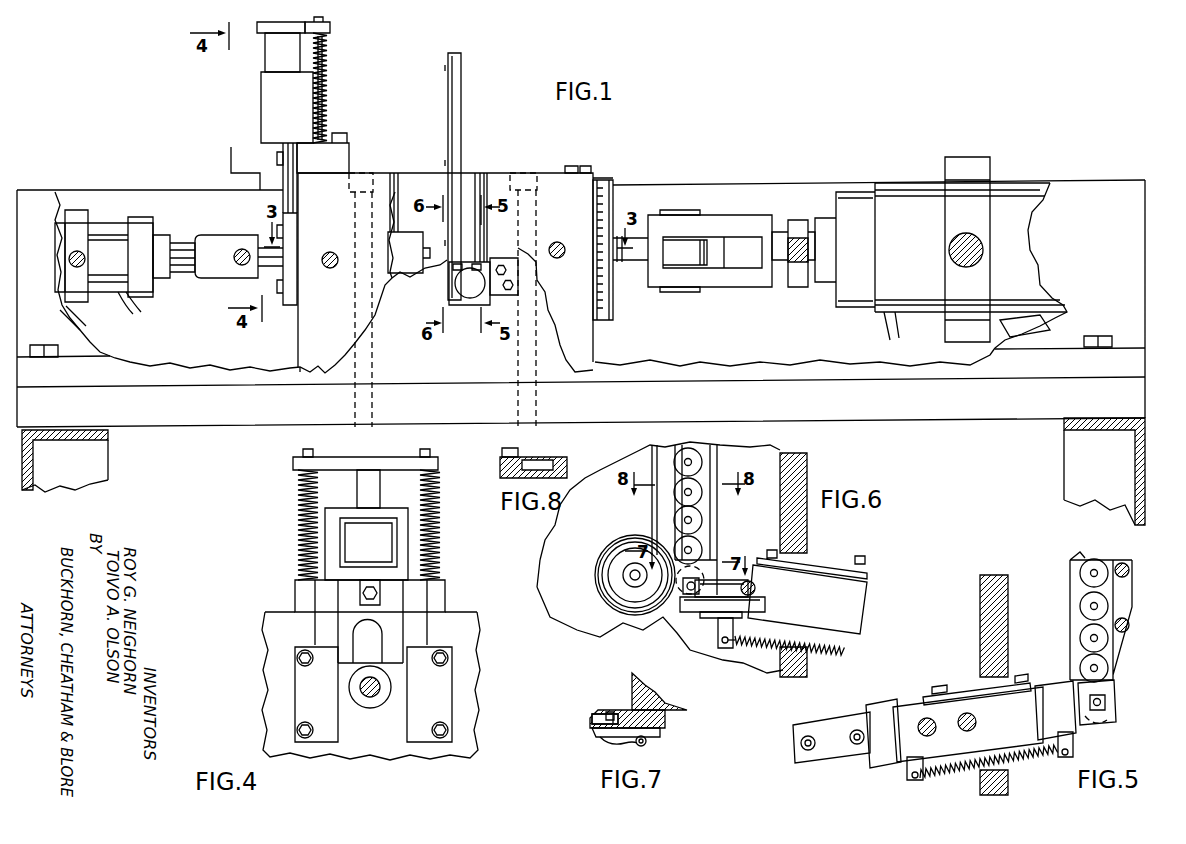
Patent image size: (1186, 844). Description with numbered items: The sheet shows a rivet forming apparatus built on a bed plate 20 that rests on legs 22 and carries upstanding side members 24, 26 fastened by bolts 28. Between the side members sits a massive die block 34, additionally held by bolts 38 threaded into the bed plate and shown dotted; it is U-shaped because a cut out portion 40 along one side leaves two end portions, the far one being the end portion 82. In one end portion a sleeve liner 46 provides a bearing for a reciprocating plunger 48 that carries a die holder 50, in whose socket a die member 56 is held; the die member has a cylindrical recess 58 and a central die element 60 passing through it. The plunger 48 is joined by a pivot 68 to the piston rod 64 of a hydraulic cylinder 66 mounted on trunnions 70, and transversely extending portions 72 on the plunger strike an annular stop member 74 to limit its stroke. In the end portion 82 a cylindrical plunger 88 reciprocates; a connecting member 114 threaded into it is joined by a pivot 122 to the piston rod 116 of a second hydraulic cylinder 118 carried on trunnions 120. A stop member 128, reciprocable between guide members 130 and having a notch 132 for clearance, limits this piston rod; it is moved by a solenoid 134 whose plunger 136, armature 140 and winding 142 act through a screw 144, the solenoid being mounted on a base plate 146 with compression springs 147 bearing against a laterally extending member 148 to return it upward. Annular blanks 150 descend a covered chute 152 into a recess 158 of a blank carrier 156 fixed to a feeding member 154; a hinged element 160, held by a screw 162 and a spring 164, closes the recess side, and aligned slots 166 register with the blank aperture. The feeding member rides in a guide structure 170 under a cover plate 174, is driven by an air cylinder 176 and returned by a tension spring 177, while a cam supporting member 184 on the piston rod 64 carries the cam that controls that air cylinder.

In FIG. 1, the bed plate 20 is at (188, 426).
In FIG. 1, the legs 22 is at (100, 459).
In FIG. 1, the side member 24 is at (690, 185).
In FIG. 1, the side member 26 is at (1108, 183).
In FIG. 1, the bolts 28 is at (56, 345).
In FIG. 1, the die block 34 is at (548, 180).
In FIG. 1, the bolts 38 is at (362, 175).
In FIG. 1, the cut out portion 40 is at (392, 188).
In FIG. 6, the sleeve liner 46 is at (600, 558).
In FIG. 1, the plunger 48 is at (645, 257).
In FIG. 1, the die holder 50 is at (480, 248).
In FIG. 6, the die holder 50 is at (607, 549).
In FIG. 6, the die member 56 is at (628, 534).
In FIG. 6, the cylindrical recess 58 is at (623, 580).
In FIG. 1, the central die element 60 is at (478, 262).
In FIG. 6, the central die element 60 is at (630, 584).
In FIG. 1, the piston rod 64 is at (752, 222).
In FIG. 1, the hydraulic cylinder 66 is at (897, 195).
In FIG. 1, the pivot 68 is at (680, 242).
In FIG. 1, the trunnions 70 is at (983, 253).
In FIG. 1, the transversely extending portions 72 is at (690, 262).
In FIG. 1, the annular stop member 74 is at (605, 318).
In FIG. 1, the end portion 82 is at (296, 375).
In FIG. 5, the end portion 82 is at (1007, 630).
In FIG. 4, the plunger 88 is at (383, 698).
In FIG. 1, the connecting member 114 is at (275, 268).
In FIG. 4, the connecting member 114 is at (378, 695).
In FIG. 1, the piston rod 116 is at (180, 247).
In FIG. 1, the hydraulic cylinder 118 is at (105, 232).
In FIG. 1, the trunnions 120 is at (85, 252).
In FIG. 1, the pivot 122 is at (240, 251).
In FIG. 1, the stop member 128 is at (292, 182).
In FIG. 4, the stop member 128 is at (347, 615).
In FIG. 1, the guide members 130 is at (290, 305).
In FIG. 4, the guide members 130 is at (298, 695).
In FIG. 4, the notch 132 is at (382, 638).
In FIG. 1, the solenoid 134 is at (258, 95).
In FIG. 4, the solenoid 134 is at (407, 506).
In FIG. 1, the plunger 136 is at (270, 57).
In FIG. 4, the plunger 136 is at (367, 490).
In FIG. 1, the armature 140 is at (272, 26).
In FIG. 4, the armature 140 is at (372, 462).
In FIG. 1, the winding 142 is at (305, 98).
In FIG. 4, the winding 142 is at (387, 542).
In FIG. 1, the screw 144 is at (278, 160).
In FIG. 4, the screw 144 is at (370, 590).
In FIG. 1, the base plate 146 is at (340, 152).
In FIG. 4, the base plate 146 is at (438, 598).
In FIG. 1, the compression springs 147 is at (325, 68).
In FIG. 4, the compression springs 147 is at (305, 500).
In FIG. 1, the laterally extending member 148 is at (328, 28).
In FIG. 4, the laterally extending member 148 is at (432, 463).
In FIG. 8, the blanks 150 is at (558, 455).
In FIG. 6, the blanks 150 is at (712, 450).
In FIG. 5, the blanks 150 is at (1113, 604).
In FIG. 1, the chute 152 is at (455, 145).
In FIG. 6, the chute 152 is at (657, 497).
In FIG. 7, the feeding member 154 is at (664, 701).
In FIG. 5, the feeding member 154 is at (1043, 697).
In FIG. 6, the blank carrier 156 is at (683, 620).
In FIG. 7, the blank carrier 156 is at (660, 718).
In FIG. 5, the blank carrier 156 is at (1108, 727).
In FIG. 7, the recess 158 is at (590, 720).
In FIG. 5, the recess 158 is at (1097, 730).
In FIG. 6, the hinged element 160 is at (712, 602).
In FIG. 7, the hinged element 160 is at (590, 732).
In FIG. 6, the screw 162 is at (752, 588).
In FIG. 7, the screw 162 is at (649, 739).
In FIG. 6, the spring 164 is at (746, 598).
In FIG. 7, the spring 164 is at (631, 743).
In FIG. 6, the slots 166 is at (668, 606).
In FIG. 7, the slots 166 is at (610, 712).
In FIG. 5, the slots 166 is at (1107, 703).
In FIG. 6, the guide structure 170 is at (852, 600).
In FIG. 5, the guide structure 170 is at (905, 705).
In FIG. 6, the cover plate 174 is at (820, 566).
In FIG. 5, the cover plate 174 is at (962, 692).
In FIG. 5, the air cylinder 176 is at (843, 755).
In FIG. 6, the tension spring 177 is at (843, 648).
In FIG. 5, the tension spring 177 is at (950, 772).
In FIG. 1, the cam supporting member 184 is at (797, 270).